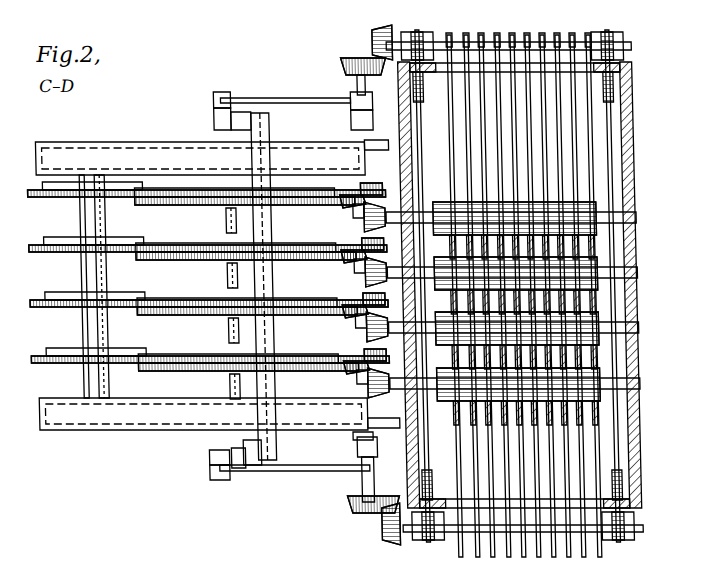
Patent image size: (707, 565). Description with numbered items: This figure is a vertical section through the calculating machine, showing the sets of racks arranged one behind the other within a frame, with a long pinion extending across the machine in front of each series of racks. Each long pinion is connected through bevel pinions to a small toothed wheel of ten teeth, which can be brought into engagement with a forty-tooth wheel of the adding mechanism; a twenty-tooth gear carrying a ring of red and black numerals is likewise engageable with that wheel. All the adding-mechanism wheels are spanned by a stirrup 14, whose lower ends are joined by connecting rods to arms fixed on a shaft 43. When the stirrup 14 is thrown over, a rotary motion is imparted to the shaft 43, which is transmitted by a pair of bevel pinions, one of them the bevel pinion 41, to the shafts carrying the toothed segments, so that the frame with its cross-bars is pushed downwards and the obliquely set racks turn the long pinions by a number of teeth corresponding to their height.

The stirrup 14 is at (273, 276).
The bevel pinion 41 is at (378, 32).
The shaft 43 is at (356, 486).